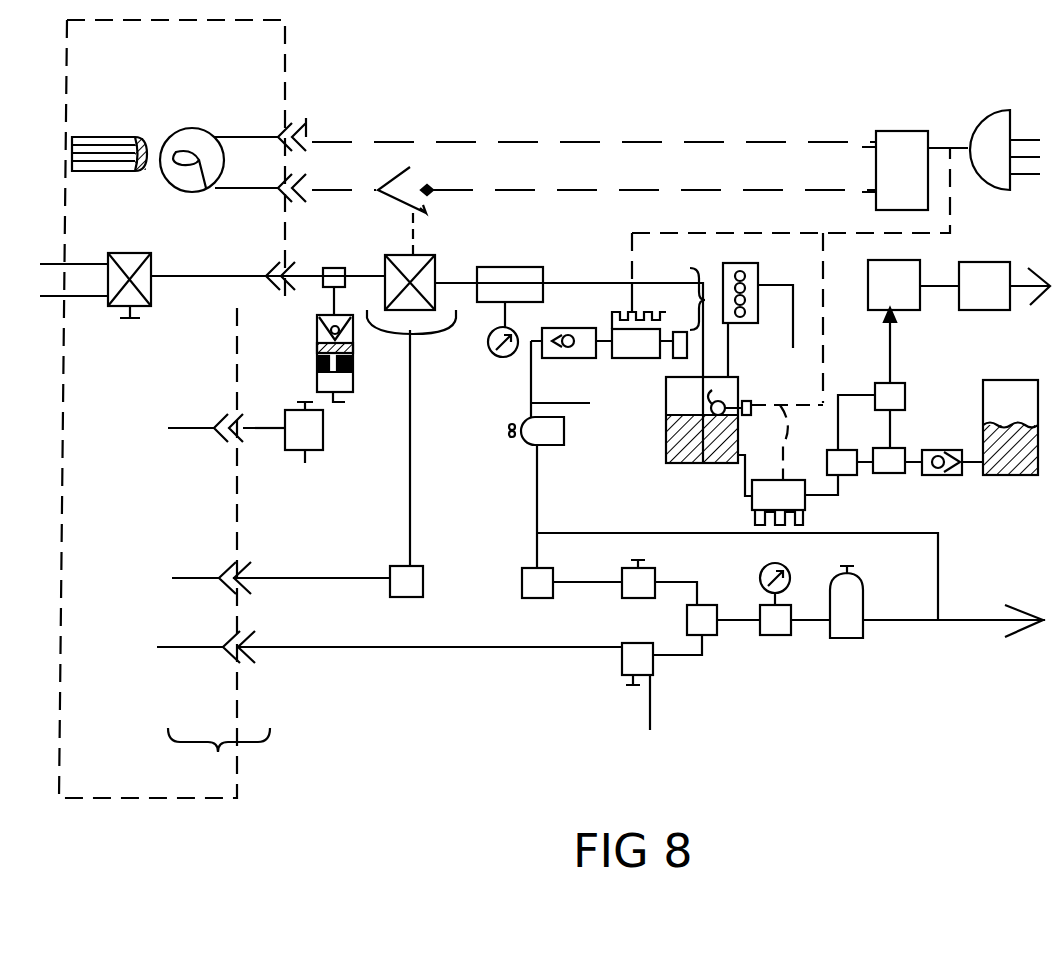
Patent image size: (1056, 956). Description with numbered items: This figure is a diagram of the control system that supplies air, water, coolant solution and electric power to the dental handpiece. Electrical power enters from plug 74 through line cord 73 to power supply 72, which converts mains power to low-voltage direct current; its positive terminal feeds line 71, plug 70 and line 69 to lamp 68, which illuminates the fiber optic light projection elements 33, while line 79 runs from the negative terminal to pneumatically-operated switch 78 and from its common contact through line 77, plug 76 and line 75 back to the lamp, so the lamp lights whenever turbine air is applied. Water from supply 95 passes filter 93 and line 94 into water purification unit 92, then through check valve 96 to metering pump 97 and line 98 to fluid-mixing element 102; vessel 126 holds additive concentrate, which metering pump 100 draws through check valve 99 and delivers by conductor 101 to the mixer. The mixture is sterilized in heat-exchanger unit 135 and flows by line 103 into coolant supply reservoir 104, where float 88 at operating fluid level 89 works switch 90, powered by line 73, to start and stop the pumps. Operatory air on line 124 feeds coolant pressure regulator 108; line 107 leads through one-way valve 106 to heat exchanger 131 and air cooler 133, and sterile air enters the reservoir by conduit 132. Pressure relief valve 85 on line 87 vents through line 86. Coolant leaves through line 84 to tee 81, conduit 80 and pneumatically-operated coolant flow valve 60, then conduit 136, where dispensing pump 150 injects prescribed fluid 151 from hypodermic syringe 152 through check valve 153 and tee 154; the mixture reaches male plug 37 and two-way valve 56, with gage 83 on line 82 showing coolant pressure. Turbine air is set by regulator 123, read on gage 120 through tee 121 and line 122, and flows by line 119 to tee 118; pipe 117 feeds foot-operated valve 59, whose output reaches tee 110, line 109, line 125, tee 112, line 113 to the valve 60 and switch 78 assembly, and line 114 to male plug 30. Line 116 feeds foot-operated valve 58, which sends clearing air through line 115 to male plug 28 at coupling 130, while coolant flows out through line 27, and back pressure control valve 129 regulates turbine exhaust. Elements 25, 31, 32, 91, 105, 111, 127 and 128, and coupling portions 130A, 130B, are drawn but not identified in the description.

The inlet line 25 is at (85, 264).
The line 27 is at (85, 296).
The line 28 is at (168, 647).
The turbine high pressure supply passage 30 is at (203, 578).
The supply line 31 is at (188, 428).
The boundary of unit 32 is at (287, 30).
The fiber optic light projection elements 33 is at (110, 172).
The male connection fitting 37 is at (263, 289).
The two-way valve 56 is at (151, 300).
The foot-operated valve 58 is at (641, 700).
The foot-operated valve 59 is at (655, 575).
The pneumatically-operated coolant flow control valve 60 is at (413, 255).
The lamp 68 is at (190, 193).
The line 69 is at (245, 137).
The plug 70 is at (296, 128).
The line 71 is at (455, 142).
The power supply 72 is at (876, 179).
The line cord 73 is at (935, 150).
The plug 74 is at (977, 125).
The line 75 is at (240, 188).
The plug 76 is at (299, 205).
The line 77 is at (357, 190).
The pneumatically-operated switch 78 is at (405, 177).
The line 79 is at (577, 192).
The conduit 80 is at (468, 283).
The tee 81 is at (533, 267).
The line 82 is at (499, 318).
The coolant pressure gage 83 is at (494, 353).
The line 84 is at (596, 283).
The pressure relief valve 85 is at (747, 262).
The line 86 is at (783, 285).
The line 87 is at (728, 348).
The float 88 is at (725, 398).
The operating fluid level 89 is at (684, 395).
The fluid level control switch 90 is at (750, 400).
The control connection 91 is at (790, 410).
The water purification unit 92 is at (868, 285).
The filter 93 is at (993, 262).
The line 94 is at (938, 286).
The water supply 95 is at (1033, 267).
The one-way check valve 96 is at (897, 316).
The metering pump 97 is at (905, 395).
The line 98 is at (838, 428).
The one-way check valve 99 is at (945, 475).
The metering pump 100 is at (896, 448).
The conductor 101 is at (865, 470).
The fluid-mixing element 102 is at (845, 477).
The line 103 is at (828, 495).
The coolant supply reservoir 104 is at (663, 450).
The line 105 is at (605, 328).
The one-way valve 106 is at (560, 358).
The line 107 is at (583, 379).
The coolant pressure regulator 108 is at (564, 431).
The line 109 is at (537, 548).
The tee 110 is at (530, 598).
The line 111 is at (575, 582).
The tee 112 is at (422, 568).
The line 113 is at (410, 460).
The line 114 is at (350, 578).
The line 115 is at (337, 647).
The line 116 is at (680, 662).
The pipe 117 is at (683, 584).
The tee 118 is at (702, 636).
The line 119 is at (732, 620).
The pressure gage 120 is at (790, 572).
The tee 121 is at (767, 635).
The line 122 is at (820, 620).
The air pressure regulator 123 is at (853, 648).
The line 124 is at (600, 532).
The line 125 is at (455, 580).
The vessel 126 is at (1015, 380).
The line 127 is at (323, 440).
The line 128 is at (272, 428).
The back pressure control valve 129 is at (303, 447).
The male coupling 130 is at (219, 755).
The first unit section 130A is at (175, 711).
The second unit section 130B is at (286, 713).
The heat-recovery multi-pass heat exchanger 131 is at (662, 316).
The conduit 132 is at (690, 366).
The air cooler 133 is at (791, 275).
The coolant-sterilizer 135 is at (752, 502).
The conduit 136 is at (375, 276).
The dispensing pump 150 is at (357, 404).
The concentrated sterile prescribed fluid 151 is at (353, 349).
The hypodermic syringe 152 is at (353, 365).
The check valve 153 is at (317, 325).
The tee 154 is at (337, 267).